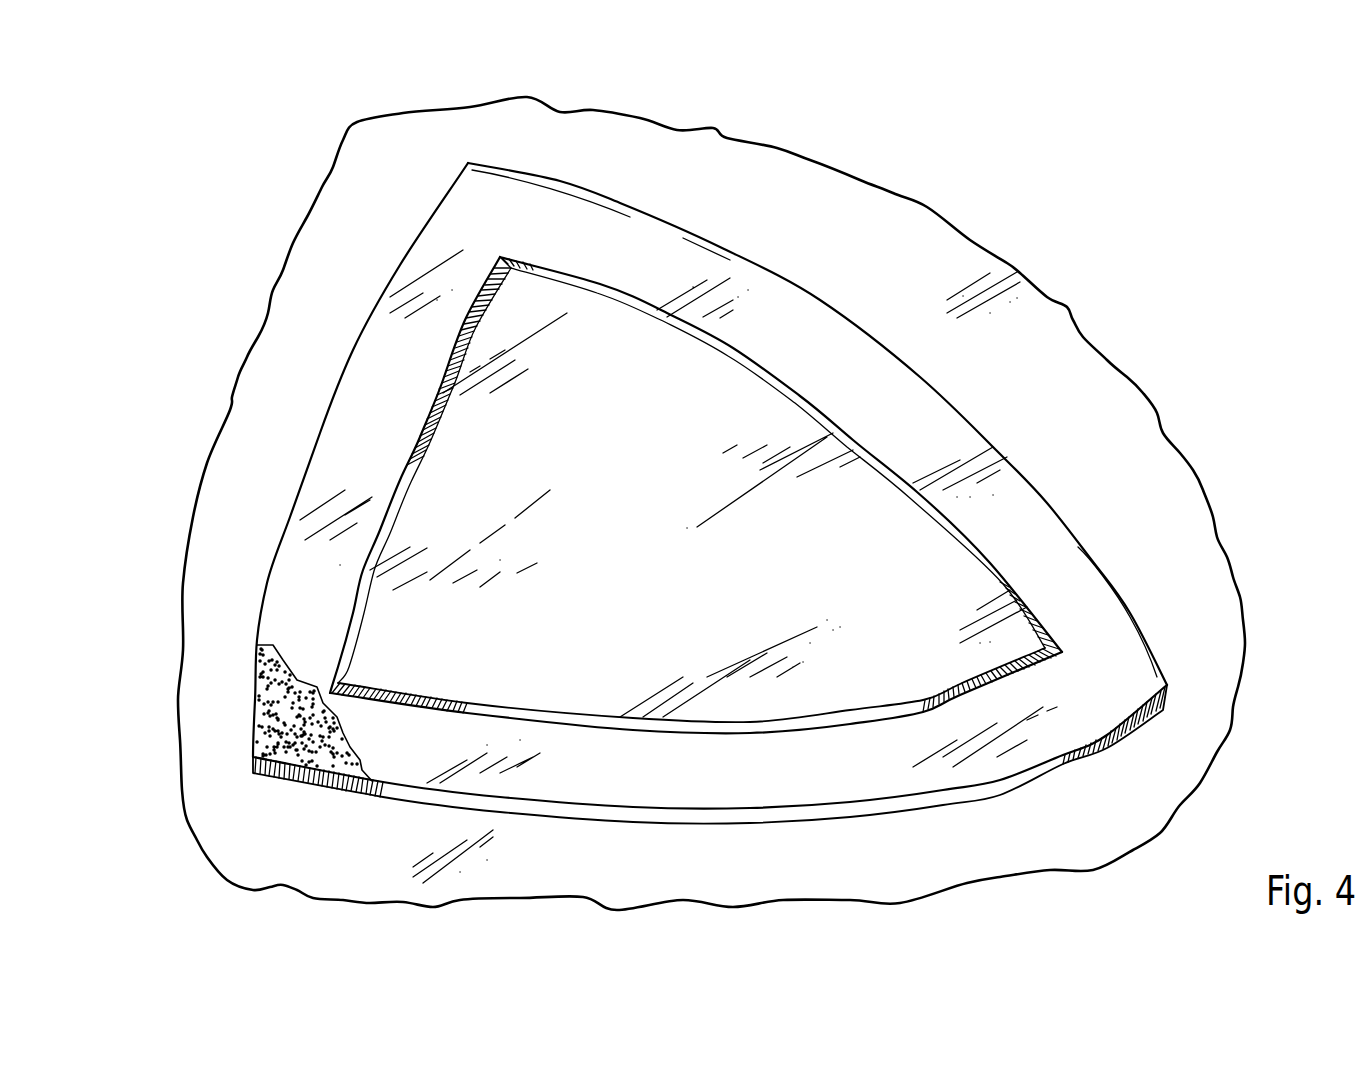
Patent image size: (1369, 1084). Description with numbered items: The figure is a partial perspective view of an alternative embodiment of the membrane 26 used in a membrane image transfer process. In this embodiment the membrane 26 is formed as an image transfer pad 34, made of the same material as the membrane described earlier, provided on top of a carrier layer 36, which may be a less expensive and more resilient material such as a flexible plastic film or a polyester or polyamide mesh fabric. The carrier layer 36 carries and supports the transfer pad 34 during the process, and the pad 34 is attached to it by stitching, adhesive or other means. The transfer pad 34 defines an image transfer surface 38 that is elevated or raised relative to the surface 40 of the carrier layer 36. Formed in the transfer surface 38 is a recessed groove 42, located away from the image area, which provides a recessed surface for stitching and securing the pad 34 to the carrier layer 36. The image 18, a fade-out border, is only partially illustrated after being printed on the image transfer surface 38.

The image 18 is at (265, 697).
The membrane 26 is at (1195, 222).
The image transfer pad 34 is at (622, 582).
The carrier layer 36 is at (919, 288).
The image transfer surface 38 is at (350, 457).
The surface of the carrier layer 40 is at (805, 207).
The recessed groove 42 is at (363, 588).